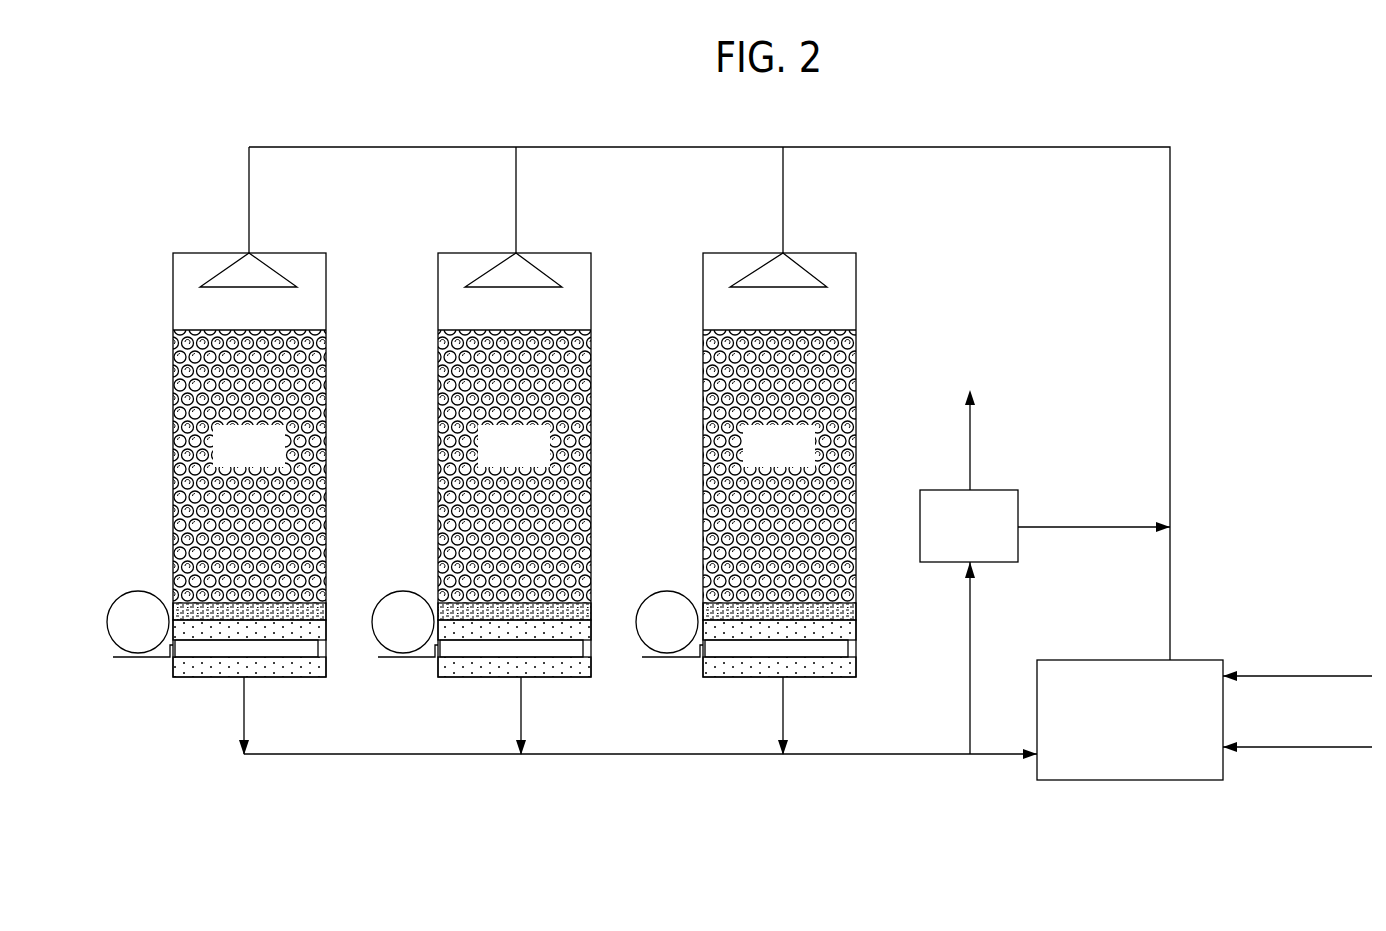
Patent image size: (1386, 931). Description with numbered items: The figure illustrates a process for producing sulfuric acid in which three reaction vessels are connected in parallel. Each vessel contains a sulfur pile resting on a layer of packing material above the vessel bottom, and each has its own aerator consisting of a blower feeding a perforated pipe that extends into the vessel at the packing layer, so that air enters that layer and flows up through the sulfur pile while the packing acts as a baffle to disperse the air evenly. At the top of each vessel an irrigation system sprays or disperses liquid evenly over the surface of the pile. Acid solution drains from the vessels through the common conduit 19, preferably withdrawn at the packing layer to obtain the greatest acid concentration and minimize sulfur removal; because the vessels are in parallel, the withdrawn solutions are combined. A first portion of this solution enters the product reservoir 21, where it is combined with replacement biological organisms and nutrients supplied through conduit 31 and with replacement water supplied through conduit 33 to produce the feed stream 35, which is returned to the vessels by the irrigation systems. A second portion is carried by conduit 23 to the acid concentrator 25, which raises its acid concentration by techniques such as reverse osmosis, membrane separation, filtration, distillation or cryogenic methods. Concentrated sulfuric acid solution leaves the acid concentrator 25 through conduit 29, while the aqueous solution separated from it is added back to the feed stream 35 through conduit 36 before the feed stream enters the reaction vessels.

The conduit 19 is at (875, 757).
The product reservoir 21 is at (1137, 783).
The conduit 23 is at (975, 617).
The acid concentrator 25 is at (1020, 497).
The conduit 29 is at (975, 425).
The conduit 31 is at (1315, 676).
The conduit 33 is at (1305, 750).
The feed stream 35 is at (1175, 238).
The conduit 36 is at (1108, 525).